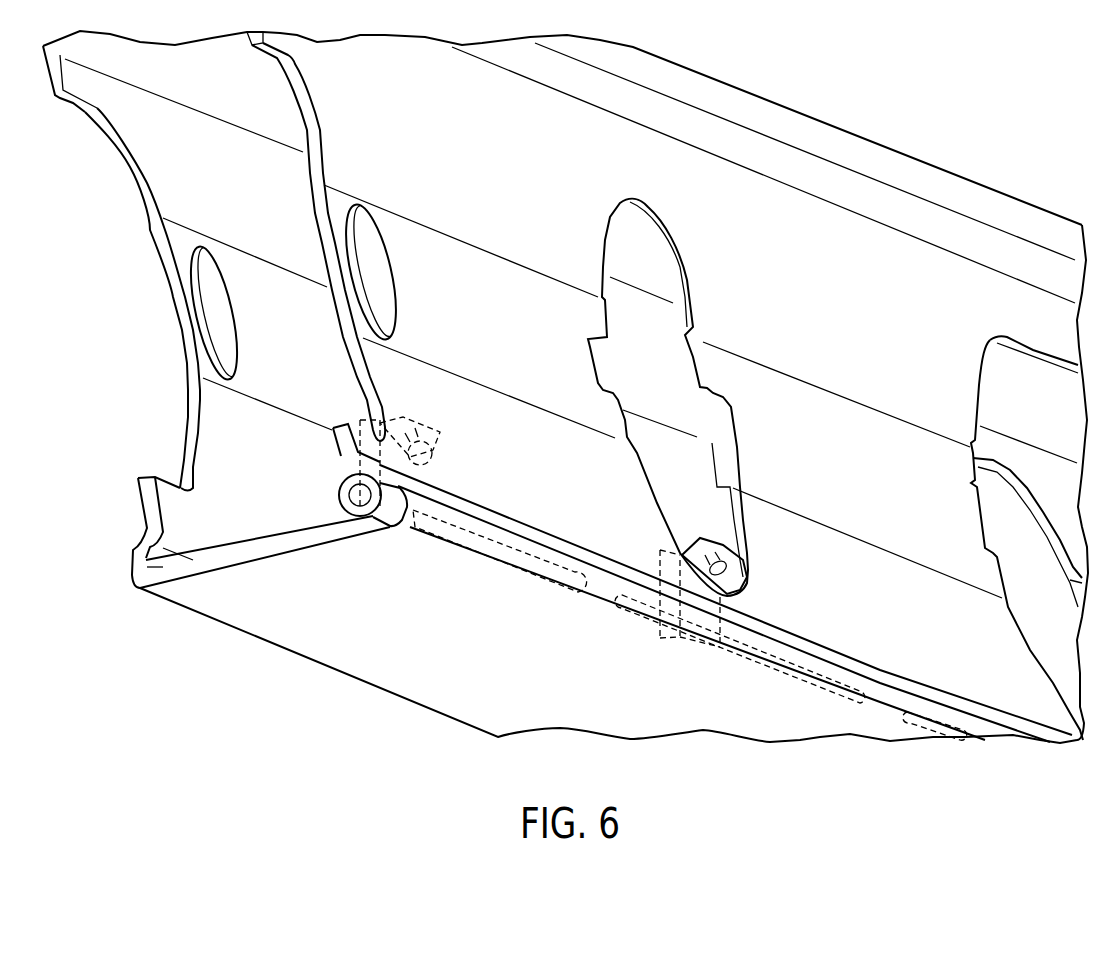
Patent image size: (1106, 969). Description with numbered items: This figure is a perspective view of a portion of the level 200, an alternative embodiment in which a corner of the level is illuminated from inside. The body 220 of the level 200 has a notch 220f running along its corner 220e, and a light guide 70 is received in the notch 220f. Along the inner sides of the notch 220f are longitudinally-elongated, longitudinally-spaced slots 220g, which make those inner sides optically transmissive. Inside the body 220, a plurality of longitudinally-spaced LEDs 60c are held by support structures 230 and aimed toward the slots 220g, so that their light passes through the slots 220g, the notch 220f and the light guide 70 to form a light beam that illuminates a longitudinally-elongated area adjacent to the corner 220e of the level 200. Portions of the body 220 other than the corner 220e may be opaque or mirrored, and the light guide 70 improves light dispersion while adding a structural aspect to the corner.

The level 200 is at (565, 387).
The body 220 is at (848, 148).
The support structures 230 is at (365, 425).
The LEDs 60c is at (440, 457).
The corner 220e is at (407, 525).
The notch 220f is at (600, 606).
The slots 220g is at (515, 570).
The light guide 70 is at (893, 706).